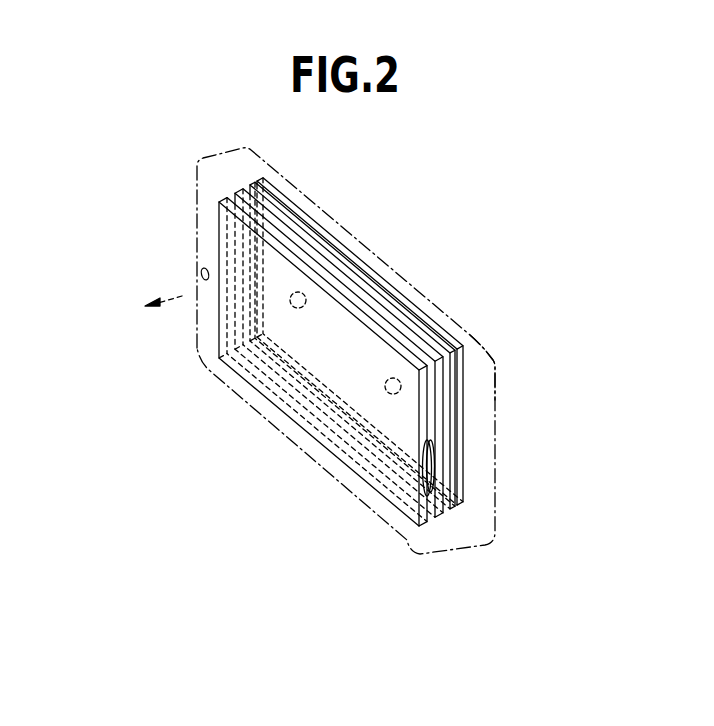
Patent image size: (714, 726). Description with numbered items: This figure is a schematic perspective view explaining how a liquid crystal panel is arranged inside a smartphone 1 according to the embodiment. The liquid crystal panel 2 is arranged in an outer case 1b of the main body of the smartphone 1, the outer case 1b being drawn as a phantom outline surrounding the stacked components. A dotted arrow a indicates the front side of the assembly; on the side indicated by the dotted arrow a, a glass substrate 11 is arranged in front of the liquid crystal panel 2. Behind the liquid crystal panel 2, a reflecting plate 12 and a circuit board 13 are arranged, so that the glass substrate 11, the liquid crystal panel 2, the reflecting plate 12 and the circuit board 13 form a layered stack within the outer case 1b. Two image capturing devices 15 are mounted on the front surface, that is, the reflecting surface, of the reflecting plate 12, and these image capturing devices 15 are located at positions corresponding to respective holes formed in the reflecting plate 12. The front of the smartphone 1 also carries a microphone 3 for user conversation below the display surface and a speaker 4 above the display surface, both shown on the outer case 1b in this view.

The smartphone 1 is at (498, 220).
The outer case 1b is at (477, 340).
The liquid crystal panel 2 is at (437, 518).
The microphone 3 is at (429, 440).
The speaker 4 is at (203, 268).
The glass substrate 11 is at (420, 528).
The reflecting plate 12 is at (450, 510).
The circuit board 13 is at (461, 506).
The image capturing devices 15 is at (299, 292).
The dotted arrow a is at (188, 292).